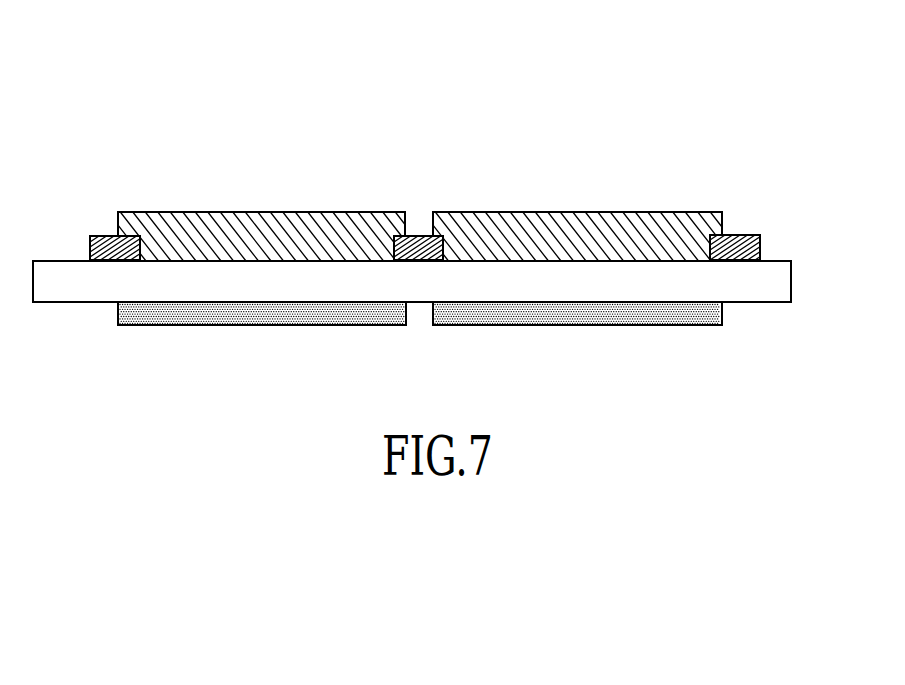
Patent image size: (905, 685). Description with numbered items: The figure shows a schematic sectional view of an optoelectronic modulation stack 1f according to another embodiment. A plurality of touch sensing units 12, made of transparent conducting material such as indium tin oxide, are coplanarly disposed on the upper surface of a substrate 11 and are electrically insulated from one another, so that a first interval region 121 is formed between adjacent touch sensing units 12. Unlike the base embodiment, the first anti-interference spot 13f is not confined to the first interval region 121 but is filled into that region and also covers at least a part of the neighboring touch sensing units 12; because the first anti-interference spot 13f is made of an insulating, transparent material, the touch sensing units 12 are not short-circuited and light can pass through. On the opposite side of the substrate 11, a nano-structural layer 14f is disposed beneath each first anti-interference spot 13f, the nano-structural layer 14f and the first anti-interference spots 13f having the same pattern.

The optoelectronic modulation stack 1f is at (156, 92).
The substrate 11 is at (791, 281).
The touch sensing units 12 is at (98, 236).
The first anti-interference spot 13f is at (245, 212).
The nano-structural layer 14f is at (247, 313).
The first interval region 121 is at (718, 163).